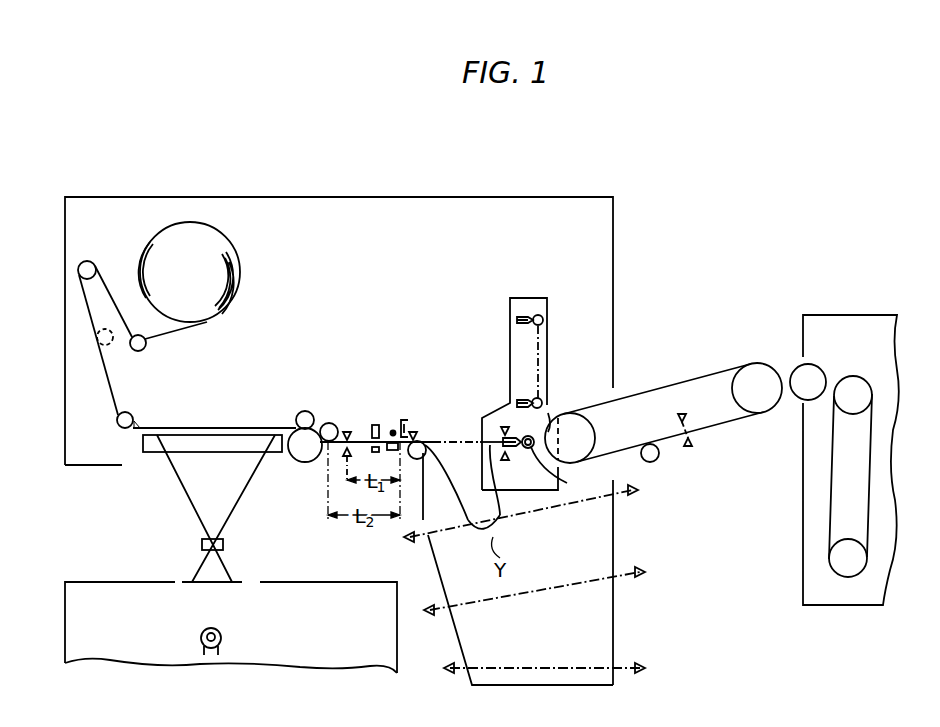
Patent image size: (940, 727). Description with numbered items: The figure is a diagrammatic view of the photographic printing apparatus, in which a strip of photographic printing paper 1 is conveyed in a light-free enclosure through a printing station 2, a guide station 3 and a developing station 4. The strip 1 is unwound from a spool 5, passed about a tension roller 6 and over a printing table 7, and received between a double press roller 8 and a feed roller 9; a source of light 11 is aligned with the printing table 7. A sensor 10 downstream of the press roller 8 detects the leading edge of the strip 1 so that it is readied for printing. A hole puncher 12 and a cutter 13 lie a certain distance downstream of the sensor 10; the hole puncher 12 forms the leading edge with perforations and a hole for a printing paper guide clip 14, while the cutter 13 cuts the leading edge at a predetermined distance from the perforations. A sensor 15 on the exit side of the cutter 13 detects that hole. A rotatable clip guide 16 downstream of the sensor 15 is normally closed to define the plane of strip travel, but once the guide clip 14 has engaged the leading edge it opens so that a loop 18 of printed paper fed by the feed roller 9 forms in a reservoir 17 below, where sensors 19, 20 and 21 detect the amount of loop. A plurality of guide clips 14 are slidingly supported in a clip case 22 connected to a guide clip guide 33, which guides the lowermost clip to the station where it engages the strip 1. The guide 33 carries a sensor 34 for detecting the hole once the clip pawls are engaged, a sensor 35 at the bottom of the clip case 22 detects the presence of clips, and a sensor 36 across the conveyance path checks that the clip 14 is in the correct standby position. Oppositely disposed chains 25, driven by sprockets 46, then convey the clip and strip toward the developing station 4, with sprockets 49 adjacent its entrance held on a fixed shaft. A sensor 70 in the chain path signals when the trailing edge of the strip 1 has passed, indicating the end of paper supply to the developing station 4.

The strip of photographic printing paper 1 is at (105, 290).
The printing station 2 is at (75, 168).
The guide station 3 is at (437, 168).
The developing station 4 is at (790, 160).
The spool 5 is at (215, 278).
The tension roller 6 is at (87, 262).
The printing table 7 is at (188, 443).
The double press roller 8 is at (310, 412).
The feed roller 9 is at (305, 452).
The sensor 10 is at (352, 427).
The source of light 11 is at (222, 632).
The hole puncher 12 is at (392, 430).
The cutter 13 is at (406, 418).
The photographic printing paper guide clip 14 is at (526, 449).
The sensor 15 is at (418, 430).
The clip guide 16 is at (458, 452).
The reservoir 17 is at (617, 542).
The loop 18 is at (500, 502).
The sensor 19 is at (640, 490).
The sensor 20 is at (647, 572).
The sensor 21 is at (647, 668).
The clip case 22 is at (521, 300).
The chains 25 is at (703, 372).
The guide clip guide 33 is at (548, 413).
The sensor 34 is at (505, 425).
The sensor 35 is at (542, 403).
The sensor 36 is at (561, 473).
The sprockets 46 is at (585, 440).
The sprockets 49 is at (767, 375).
The sensor 70 is at (690, 447).